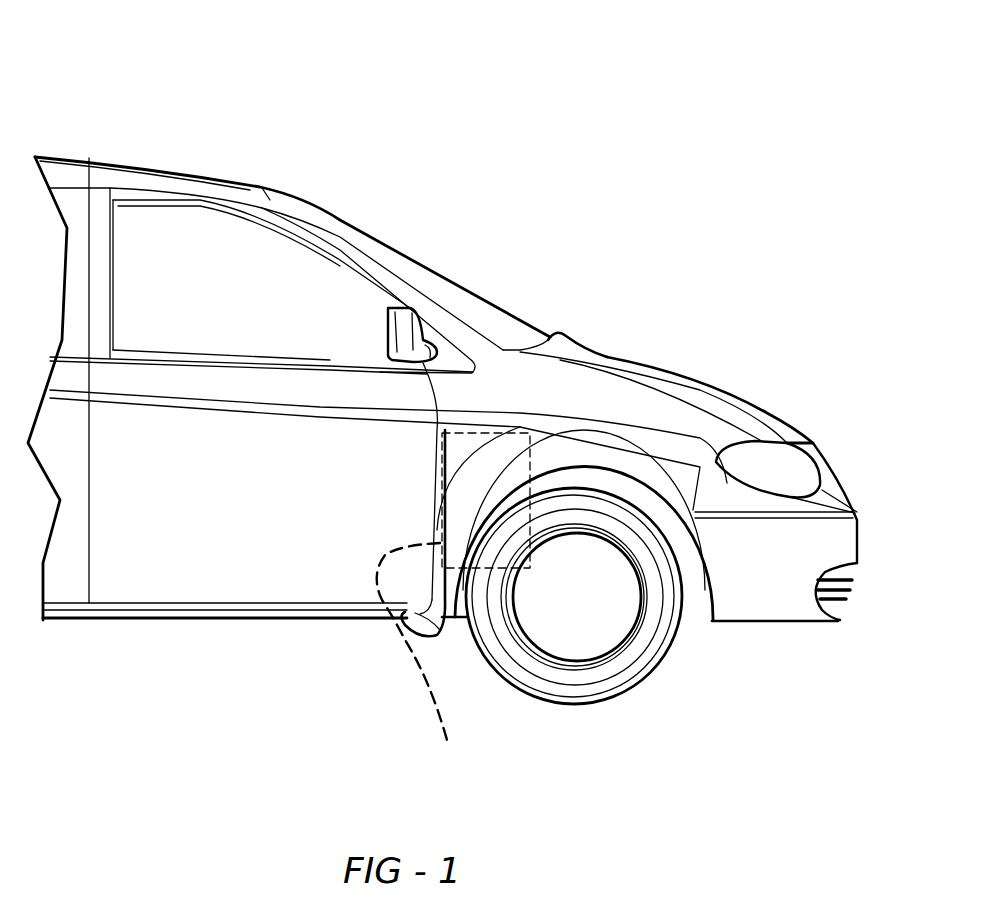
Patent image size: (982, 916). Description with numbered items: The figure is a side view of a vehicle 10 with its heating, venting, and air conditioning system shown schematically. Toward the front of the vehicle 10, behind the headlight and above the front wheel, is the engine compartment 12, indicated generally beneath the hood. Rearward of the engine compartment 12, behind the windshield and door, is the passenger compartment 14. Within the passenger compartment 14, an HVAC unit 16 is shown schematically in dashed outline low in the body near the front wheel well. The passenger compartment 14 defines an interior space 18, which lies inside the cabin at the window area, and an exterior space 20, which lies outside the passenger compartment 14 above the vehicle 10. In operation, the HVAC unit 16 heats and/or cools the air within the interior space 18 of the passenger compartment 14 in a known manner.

The vehicle 10 is at (370, 107).
The engine compartment 12 is at (540, 400).
The passenger compartment 14 is at (300, 285).
The HVAC unit 16 is at (420, 659).
The interior space 18 is at (218, 300).
The exterior space 20 is at (683, 66).